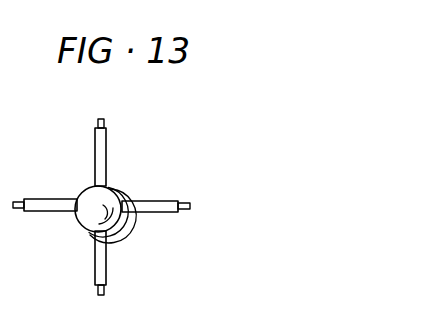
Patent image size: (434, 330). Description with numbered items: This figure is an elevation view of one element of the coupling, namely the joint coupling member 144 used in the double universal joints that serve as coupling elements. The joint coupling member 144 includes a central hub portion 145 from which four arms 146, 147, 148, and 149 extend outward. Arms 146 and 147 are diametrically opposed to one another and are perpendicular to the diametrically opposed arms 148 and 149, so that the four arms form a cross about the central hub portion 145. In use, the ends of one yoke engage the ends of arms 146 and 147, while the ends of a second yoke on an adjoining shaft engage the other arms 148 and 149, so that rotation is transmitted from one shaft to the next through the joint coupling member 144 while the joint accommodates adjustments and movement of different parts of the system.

The joint coupling member 144 is at (121, 186).
The central hub portion 145 is at (92, 196).
The arm 146 is at (103, 143).
The arm 147 is at (108, 258).
The arm 148 is at (53, 208).
The arm 149 is at (165, 209).